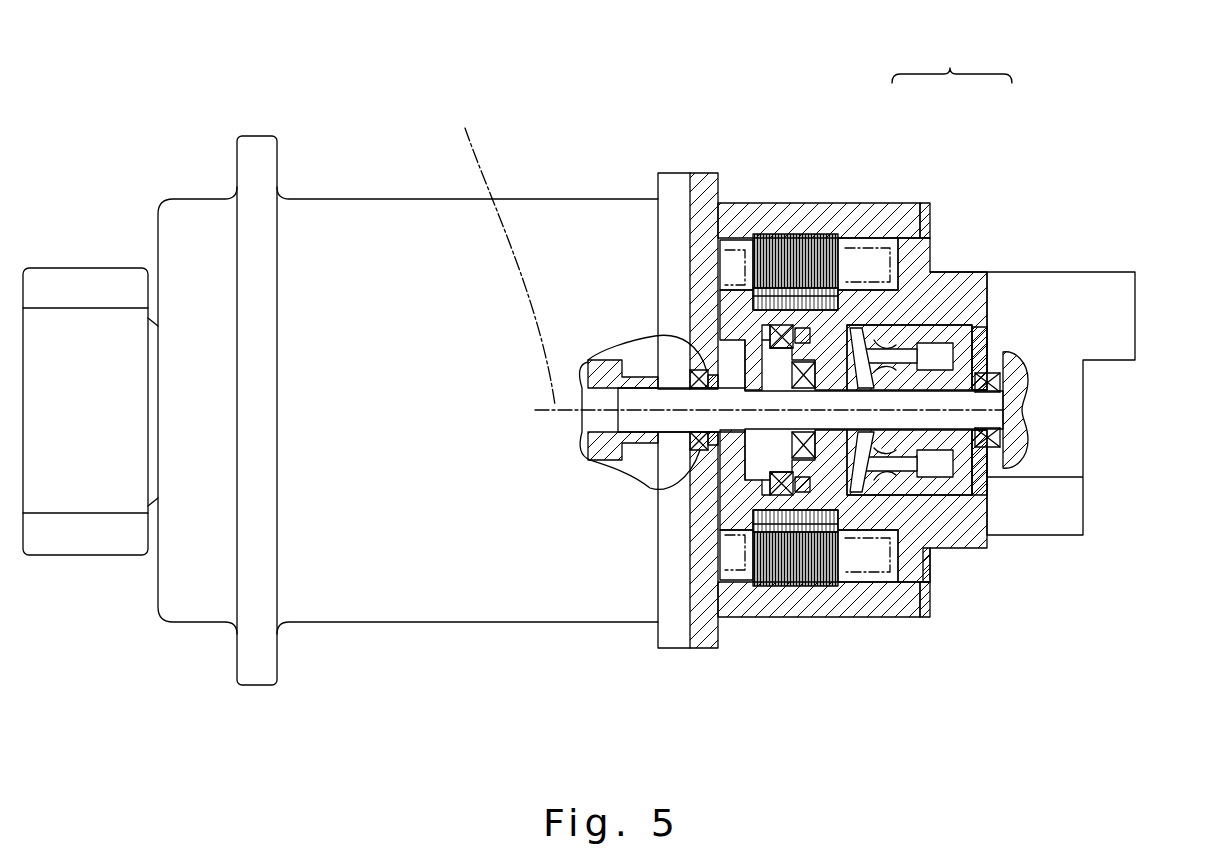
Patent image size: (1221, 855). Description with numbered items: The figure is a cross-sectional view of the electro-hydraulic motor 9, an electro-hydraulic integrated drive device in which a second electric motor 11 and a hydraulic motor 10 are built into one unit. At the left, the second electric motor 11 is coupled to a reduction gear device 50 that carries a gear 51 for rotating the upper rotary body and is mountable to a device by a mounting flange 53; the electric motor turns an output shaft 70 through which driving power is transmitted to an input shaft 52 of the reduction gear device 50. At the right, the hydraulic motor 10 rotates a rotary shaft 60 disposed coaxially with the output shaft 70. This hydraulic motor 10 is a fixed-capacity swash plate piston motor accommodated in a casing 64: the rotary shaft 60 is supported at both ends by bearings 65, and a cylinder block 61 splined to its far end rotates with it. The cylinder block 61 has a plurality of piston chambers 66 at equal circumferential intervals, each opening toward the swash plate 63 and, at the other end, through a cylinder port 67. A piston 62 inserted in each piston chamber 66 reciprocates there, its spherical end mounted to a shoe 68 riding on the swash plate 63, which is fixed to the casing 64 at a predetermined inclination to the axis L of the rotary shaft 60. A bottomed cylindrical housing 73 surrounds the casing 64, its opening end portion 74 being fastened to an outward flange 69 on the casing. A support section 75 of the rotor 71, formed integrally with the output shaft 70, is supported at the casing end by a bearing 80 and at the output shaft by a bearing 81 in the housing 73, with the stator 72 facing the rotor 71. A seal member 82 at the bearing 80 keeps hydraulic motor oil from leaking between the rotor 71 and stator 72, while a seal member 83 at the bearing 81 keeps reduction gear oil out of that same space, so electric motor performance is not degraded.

The electro-hydraulic motor 9 is at (952, 60).
The hydraulic motor 10 is at (946, 270).
The second electric motor 11 is at (871, 200).
The reduction gear device 50 is at (414, 196).
The gear 51 is at (94, 270).
The input shaft 52 is at (590, 450).
The mounting flange 53 is at (248, 655).
The rotary shaft 60 is at (740, 425).
The cylinder block 61 is at (955, 340).
The piston 62 is at (985, 350).
The swash plate 63 is at (978, 347).
The casing 64 is at (952, 552).
The bearing 65 is at (768, 330).
The piston chamber 66 is at (1083, 480).
The cylinder port 67 is at (990, 355).
The shoe 68 is at (844, 475).
The outward flange 69 is at (923, 603).
The output shaft 70 is at (643, 432).
The rotor 71 is at (800, 333).
The stator 72 is at (805, 234).
The housing 73 is at (780, 621).
The opening end portion 74 is at (907, 605).
The support section 75 is at (755, 320).
The bearing 80 is at (726, 412).
The bearing 81 is at (690, 378).
The seal member 82 is at (678, 422).
The seal member 83 is at (690, 395).
The axis L is at (506, 251).